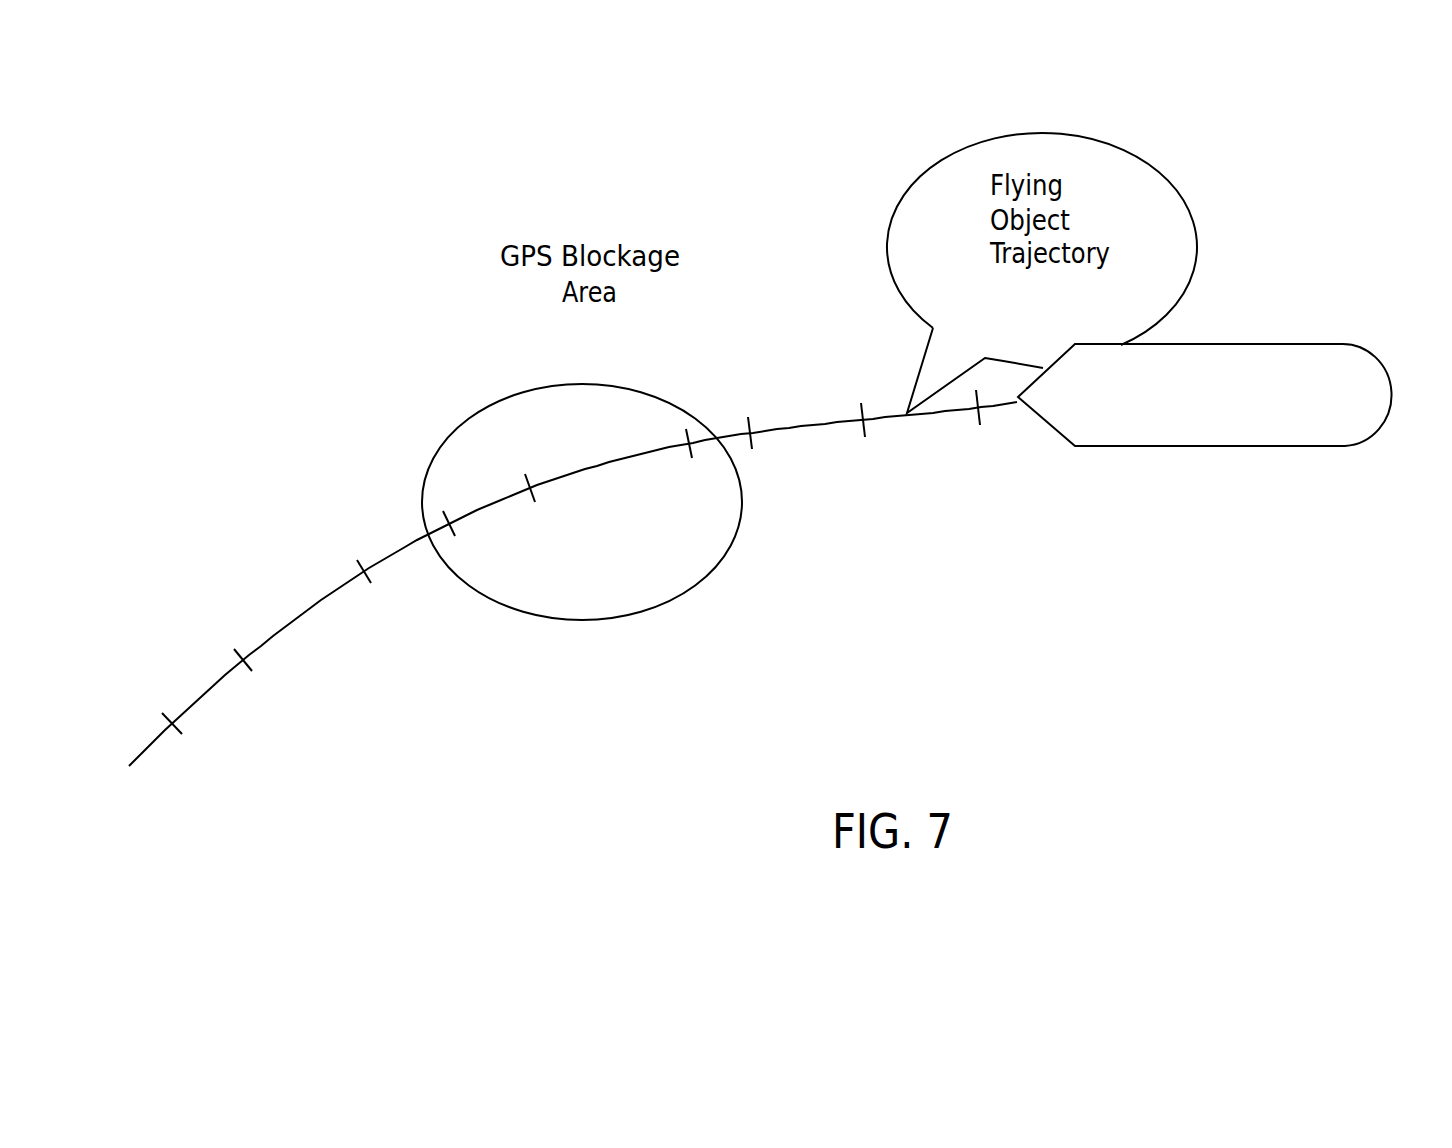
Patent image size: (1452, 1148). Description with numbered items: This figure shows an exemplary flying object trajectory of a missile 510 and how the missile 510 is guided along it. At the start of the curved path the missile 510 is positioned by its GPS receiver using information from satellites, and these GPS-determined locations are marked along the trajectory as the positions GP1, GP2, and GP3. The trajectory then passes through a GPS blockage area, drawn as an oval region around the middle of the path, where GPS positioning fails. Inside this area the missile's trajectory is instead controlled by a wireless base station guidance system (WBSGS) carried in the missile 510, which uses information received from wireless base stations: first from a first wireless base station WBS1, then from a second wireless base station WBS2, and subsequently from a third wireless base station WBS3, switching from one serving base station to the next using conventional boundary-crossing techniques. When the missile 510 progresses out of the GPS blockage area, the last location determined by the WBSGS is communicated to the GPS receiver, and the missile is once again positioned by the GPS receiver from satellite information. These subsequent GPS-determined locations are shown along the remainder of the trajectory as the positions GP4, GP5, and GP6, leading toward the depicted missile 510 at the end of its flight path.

The missile 510 is at (1288, 344).
The GPS location position GP1 is at (200, 769).
The GPS location position GP2 is at (270, 700).
The GPS location position GP3 is at (384, 604).
The GPS location position GP4 is at (776, 463).
The GPS location position GP5 is at (877, 455).
The GPS location position GP6 is at (998, 443).
The first wireless base station WBS1 is at (468, 562).
The second wireless base station WBS2 is at (550, 532).
The third wireless base station WBS3 is at (708, 490).